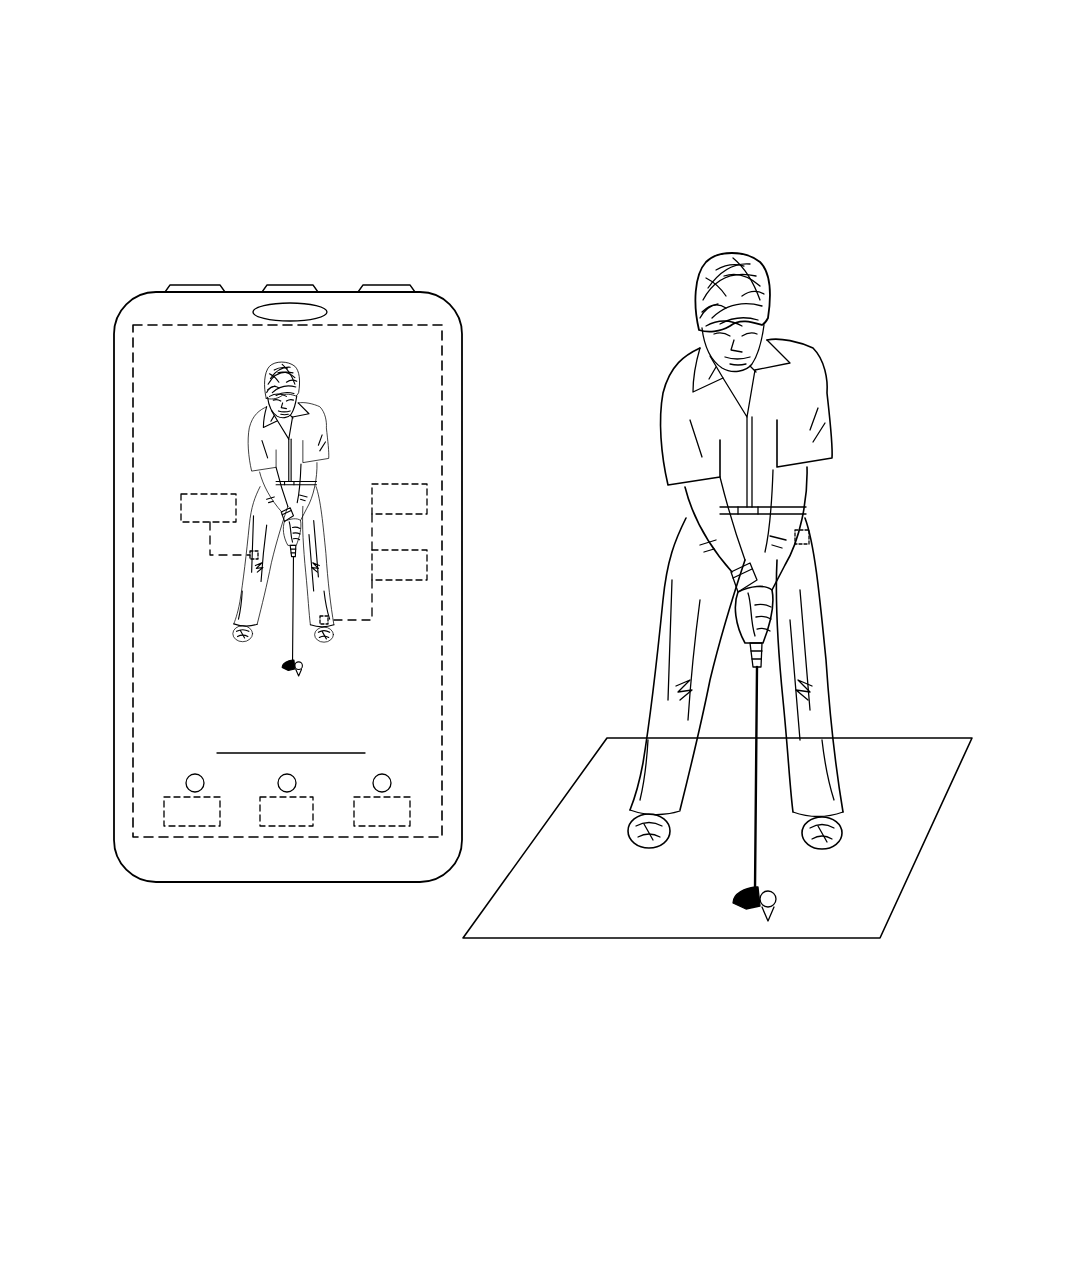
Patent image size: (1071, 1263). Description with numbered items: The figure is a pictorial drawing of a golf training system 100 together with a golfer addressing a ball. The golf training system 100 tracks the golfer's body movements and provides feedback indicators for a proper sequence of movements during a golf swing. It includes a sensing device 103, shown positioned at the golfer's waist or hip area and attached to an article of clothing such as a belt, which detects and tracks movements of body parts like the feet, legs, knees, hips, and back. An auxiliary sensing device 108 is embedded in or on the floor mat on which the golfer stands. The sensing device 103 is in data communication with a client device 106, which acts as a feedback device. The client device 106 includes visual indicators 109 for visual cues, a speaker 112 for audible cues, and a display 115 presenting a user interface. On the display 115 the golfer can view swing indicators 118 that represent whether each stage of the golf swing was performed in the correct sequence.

The golf training system 100 is at (492, 66).
The client device 106 is at (135, 302).
The visual indicators 109 is at (420, 285).
The speaker 112 is at (403, 321).
The display 115 is at (446, 322).
The swing indicators 118 is at (330, 712).
The sensing device 103 is at (812, 537).
The auxiliary sensing device 108 is at (938, 736).